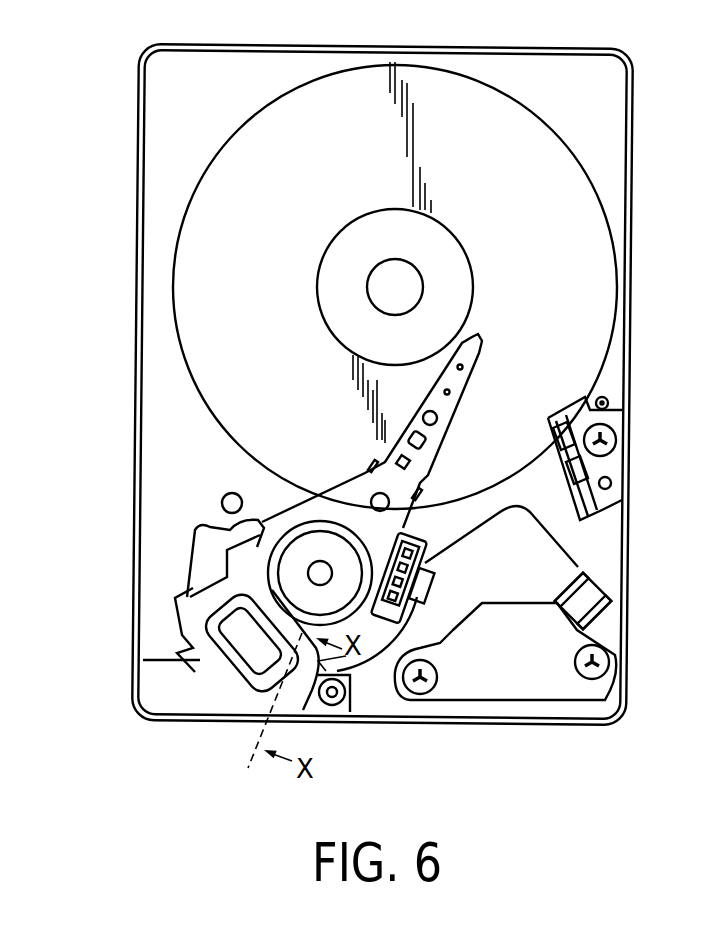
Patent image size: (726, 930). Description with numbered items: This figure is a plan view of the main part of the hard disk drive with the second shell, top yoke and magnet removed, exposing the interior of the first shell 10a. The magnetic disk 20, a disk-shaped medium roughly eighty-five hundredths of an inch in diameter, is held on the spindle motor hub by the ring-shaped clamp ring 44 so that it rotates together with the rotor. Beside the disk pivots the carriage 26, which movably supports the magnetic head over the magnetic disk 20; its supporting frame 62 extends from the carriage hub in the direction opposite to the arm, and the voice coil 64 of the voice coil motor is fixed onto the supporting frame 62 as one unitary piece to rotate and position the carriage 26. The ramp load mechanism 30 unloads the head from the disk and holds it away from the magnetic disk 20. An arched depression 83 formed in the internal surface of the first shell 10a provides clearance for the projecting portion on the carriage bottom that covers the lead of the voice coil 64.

The first shell 10a is at (636, 130).
The magnetic disk 20 is at (208, 281).
The clamp ring 44 is at (458, 291).
The carriage 26 is at (350, 492).
The ramp load mechanism 30 is at (613, 460).
The supporting frame 62 is at (186, 600).
The voice coil 64 is at (235, 668).
The arched depression 83 is at (388, 640).